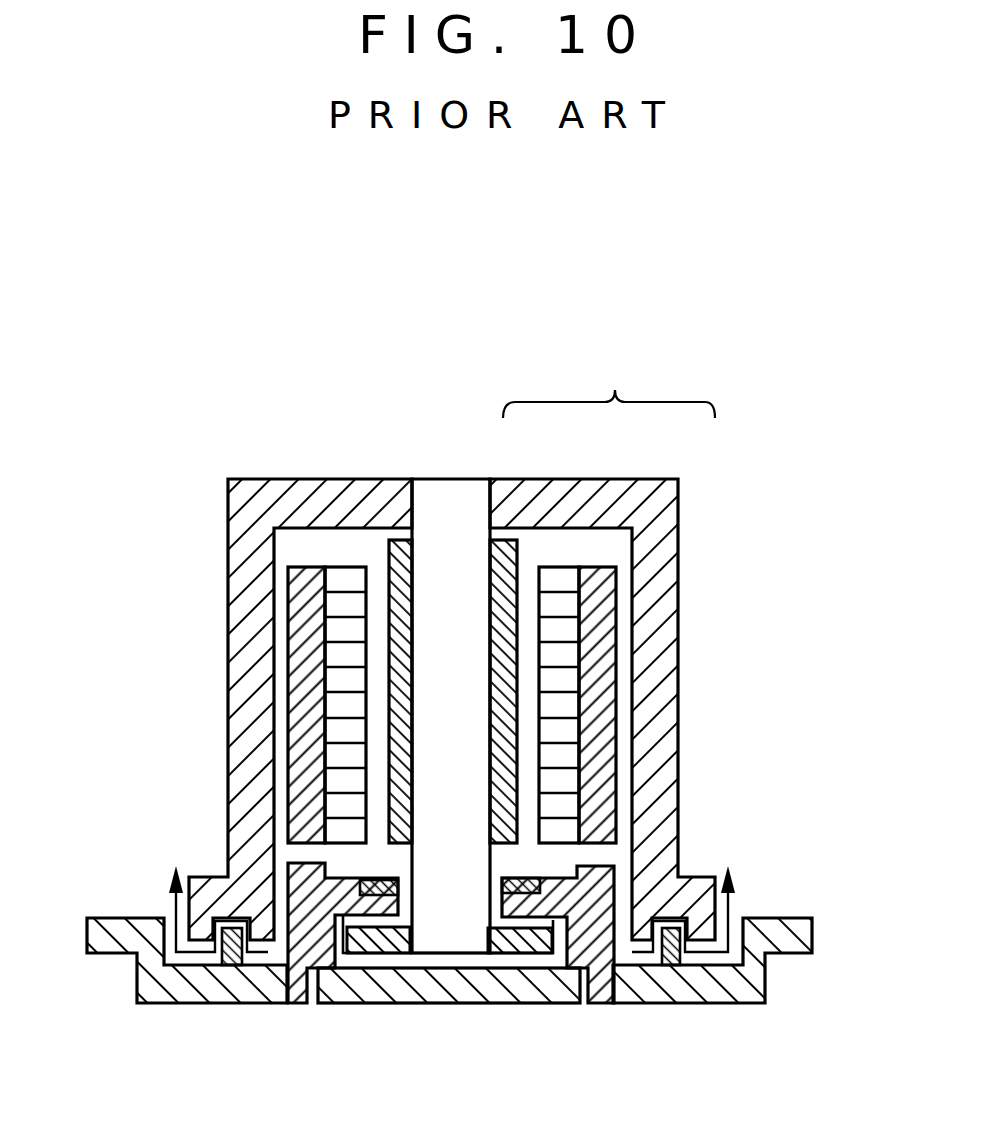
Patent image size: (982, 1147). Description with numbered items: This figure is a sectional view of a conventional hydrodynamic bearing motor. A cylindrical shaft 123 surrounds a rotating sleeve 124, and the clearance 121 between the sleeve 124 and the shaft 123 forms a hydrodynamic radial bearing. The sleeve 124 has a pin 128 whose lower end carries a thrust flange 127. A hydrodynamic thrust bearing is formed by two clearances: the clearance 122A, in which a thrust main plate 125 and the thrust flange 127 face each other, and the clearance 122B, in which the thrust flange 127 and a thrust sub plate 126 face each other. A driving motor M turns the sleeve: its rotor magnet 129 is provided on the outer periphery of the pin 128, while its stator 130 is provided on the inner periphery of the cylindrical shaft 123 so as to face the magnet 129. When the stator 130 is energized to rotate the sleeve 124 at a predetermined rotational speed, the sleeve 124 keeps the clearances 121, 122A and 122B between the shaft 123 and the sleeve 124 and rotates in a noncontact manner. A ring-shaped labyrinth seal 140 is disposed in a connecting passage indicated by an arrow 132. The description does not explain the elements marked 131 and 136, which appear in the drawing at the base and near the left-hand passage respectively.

The clearance 121 is at (278, 633).
The clearance 122A is at (393, 958).
The clearance 122B is at (530, 928).
The shaft 123 is at (305, 600).
The sleeve 124 is at (250, 693).
The thrust main plate 125 is at (550, 985).
The thrust sub plate 126 is at (548, 893).
The thrust flange 127 is at (363, 940).
The pin 128 is at (442, 493).
The magnet 129 is at (502, 553).
The stator 130 is at (548, 582).
The base 131 is at (160, 983).
The arrow 132 is at (727, 905).
The air flow path 136 is at (165, 913).
The labyrinth seal 140 is at (668, 958).
The driving motor M is at (609, 381).